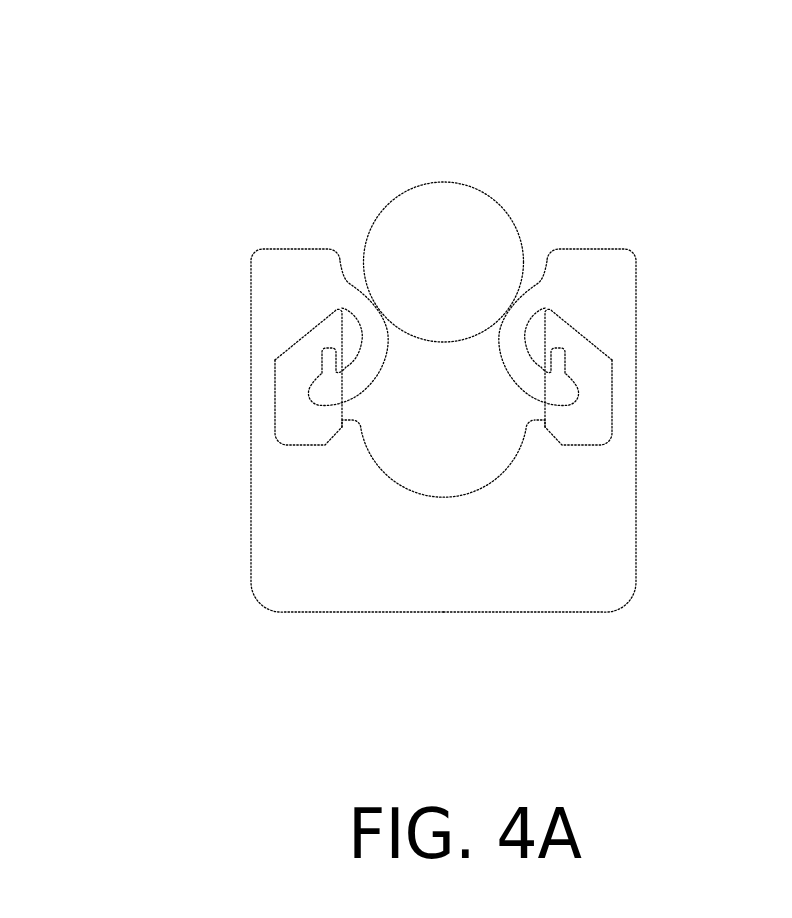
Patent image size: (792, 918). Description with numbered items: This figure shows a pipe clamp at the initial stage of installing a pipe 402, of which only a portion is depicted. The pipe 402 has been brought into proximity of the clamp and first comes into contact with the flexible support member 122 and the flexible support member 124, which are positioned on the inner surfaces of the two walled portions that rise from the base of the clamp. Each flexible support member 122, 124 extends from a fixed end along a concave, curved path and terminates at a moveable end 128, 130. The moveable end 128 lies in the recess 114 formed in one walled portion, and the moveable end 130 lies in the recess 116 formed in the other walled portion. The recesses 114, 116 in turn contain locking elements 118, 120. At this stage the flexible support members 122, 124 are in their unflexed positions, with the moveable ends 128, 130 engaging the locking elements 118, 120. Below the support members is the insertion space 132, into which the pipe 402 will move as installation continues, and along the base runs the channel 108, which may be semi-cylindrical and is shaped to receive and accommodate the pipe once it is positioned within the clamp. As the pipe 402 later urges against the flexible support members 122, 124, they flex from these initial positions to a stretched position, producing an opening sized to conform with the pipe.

The channel 108 is at (452, 526).
The recess 114 is at (290, 396).
The recess 116 is at (596, 396).
The locking element 118 is at (325, 358).
The locking element 120 is at (563, 357).
The flexible support member 122 is at (378, 371).
The flexible support member 124 is at (508, 369).
The moveable end 128 is at (308, 403).
The moveable end 130 is at (580, 405).
The insertion space 132 is at (397, 442).
The pipe 402 is at (522, 248).